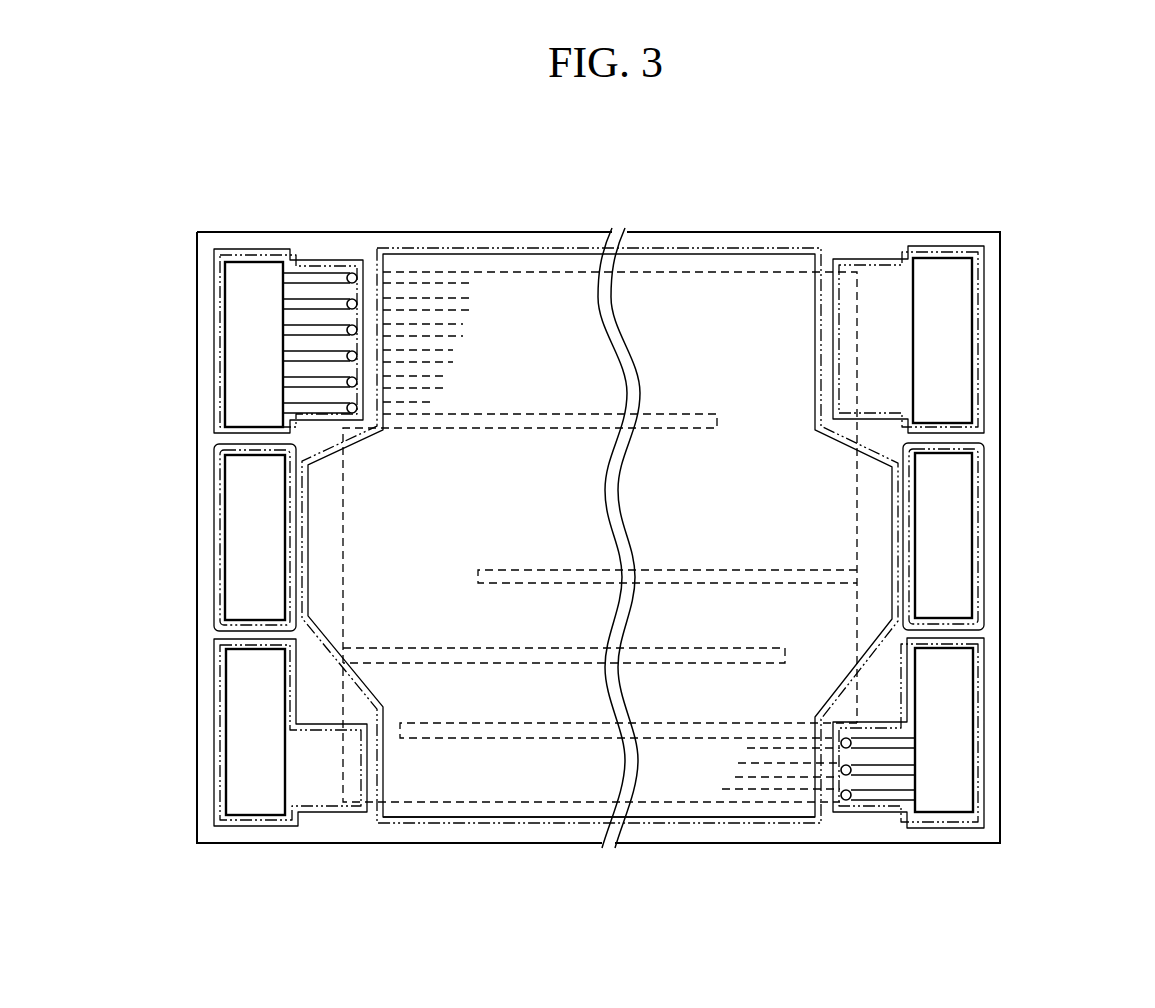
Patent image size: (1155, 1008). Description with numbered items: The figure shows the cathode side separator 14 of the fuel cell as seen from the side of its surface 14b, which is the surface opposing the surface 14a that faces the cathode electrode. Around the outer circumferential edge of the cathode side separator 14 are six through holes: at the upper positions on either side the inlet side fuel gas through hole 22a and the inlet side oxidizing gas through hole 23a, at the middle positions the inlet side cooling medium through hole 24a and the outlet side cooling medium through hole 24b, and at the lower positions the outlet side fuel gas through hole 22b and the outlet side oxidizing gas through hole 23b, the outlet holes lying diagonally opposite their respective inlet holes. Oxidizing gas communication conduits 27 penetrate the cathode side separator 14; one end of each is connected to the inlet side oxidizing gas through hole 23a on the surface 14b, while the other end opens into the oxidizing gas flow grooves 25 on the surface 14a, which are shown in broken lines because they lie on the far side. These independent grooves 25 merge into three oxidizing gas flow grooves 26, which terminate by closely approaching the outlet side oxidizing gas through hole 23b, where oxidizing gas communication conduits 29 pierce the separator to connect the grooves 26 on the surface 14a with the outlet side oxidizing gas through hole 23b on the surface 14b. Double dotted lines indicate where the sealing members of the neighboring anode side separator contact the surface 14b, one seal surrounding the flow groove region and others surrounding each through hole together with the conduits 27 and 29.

The cathode side separator 14 is at (690, 232).
The surface of the cathode side separator facing the cathode electrode 14a is at (554, 232).
The surface opposing the surface 14a 14b is at (822, 232).
The inlet side oxidizing gas through hole 23a is at (245, 344).
The outlet side oxidizing gas through hole 23b is at (952, 724).
The inlet side cooling medium through hole 24a is at (947, 540).
The outlet side cooling medium through hole 24b is at (250, 537).
The inlet side fuel gas through hole 22a is at (947, 346).
The outlet side fuel gas through hole 22b is at (250, 720).
The oxidizing gas flow grooves 25 is at (411, 272).
The oxidizing gas flow grooves 26 is at (784, 777).
The oxidizing gas communication conduits 27 is at (347, 302).
The oxidizing gas communication conduits 29 is at (852, 745).